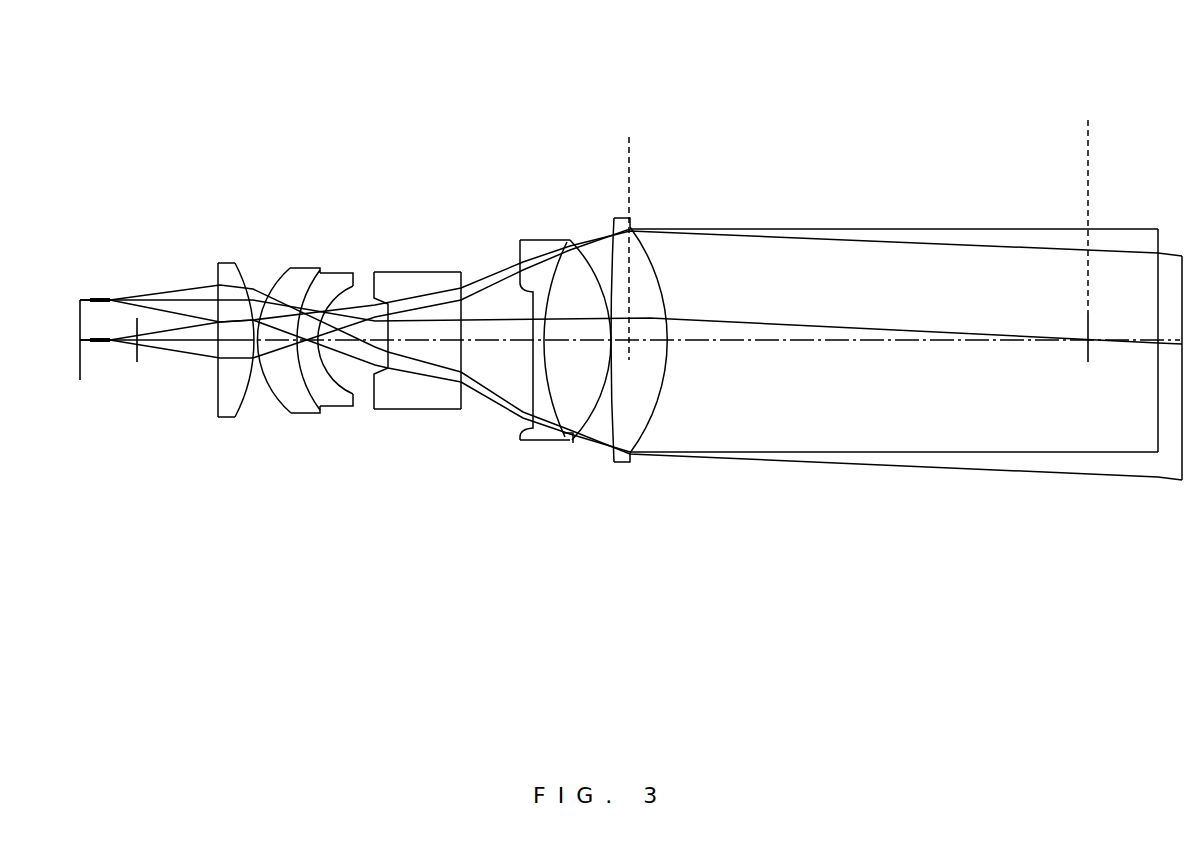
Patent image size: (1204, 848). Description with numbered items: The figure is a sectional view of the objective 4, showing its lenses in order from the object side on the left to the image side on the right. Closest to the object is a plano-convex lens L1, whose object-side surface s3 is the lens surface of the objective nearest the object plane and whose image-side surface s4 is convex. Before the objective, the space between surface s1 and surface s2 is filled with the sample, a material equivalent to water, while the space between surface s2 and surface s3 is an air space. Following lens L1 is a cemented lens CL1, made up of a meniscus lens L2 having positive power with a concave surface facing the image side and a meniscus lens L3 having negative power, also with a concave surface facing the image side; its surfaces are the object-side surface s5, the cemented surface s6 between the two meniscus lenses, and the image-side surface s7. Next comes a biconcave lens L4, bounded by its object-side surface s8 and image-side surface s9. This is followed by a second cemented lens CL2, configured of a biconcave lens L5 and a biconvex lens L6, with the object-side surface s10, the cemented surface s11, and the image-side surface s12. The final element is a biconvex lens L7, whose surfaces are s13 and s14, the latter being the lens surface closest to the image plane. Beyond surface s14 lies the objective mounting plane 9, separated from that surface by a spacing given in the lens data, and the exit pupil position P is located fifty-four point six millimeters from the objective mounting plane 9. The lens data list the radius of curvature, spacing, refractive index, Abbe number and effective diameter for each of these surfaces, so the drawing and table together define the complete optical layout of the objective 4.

The objective 4 is at (1167, 70).
The objective mounting plane 9 is at (629, 137).
The exit pupil position P is at (1088, 145).
The surface s1 is at (78, 312).
The surface s2 is at (135, 322).
The surface s3 is at (217, 283).
The surface s4 is at (242, 280).
The surface s5 is at (280, 282).
The surface s6 is at (303, 282).
The surface s7 is at (354, 284).
The surface s8 is at (377, 300).
The surface s9 is at (466, 282).
The surface s10 is at (520, 250).
The surface s11 is at (545, 262).
The surface s12 is at (590, 252).
The surface s13 is at (612, 256).
The surface s14 is at (657, 222).
The plano-convex lens L1 is at (223, 344).
The meniscus lens L2 is at (301, 322).
The meniscus lens L3 is at (350, 334).
The biconcave lens L4 is at (420, 345).
The biconcave lens L5 is at (504, 300).
The biconvex lens L6 is at (569, 321).
The biconvex lens L7 is at (654, 323).
The cemented lens CL1 is at (319, 343).
The cemented lens CL2 is at (524, 321).